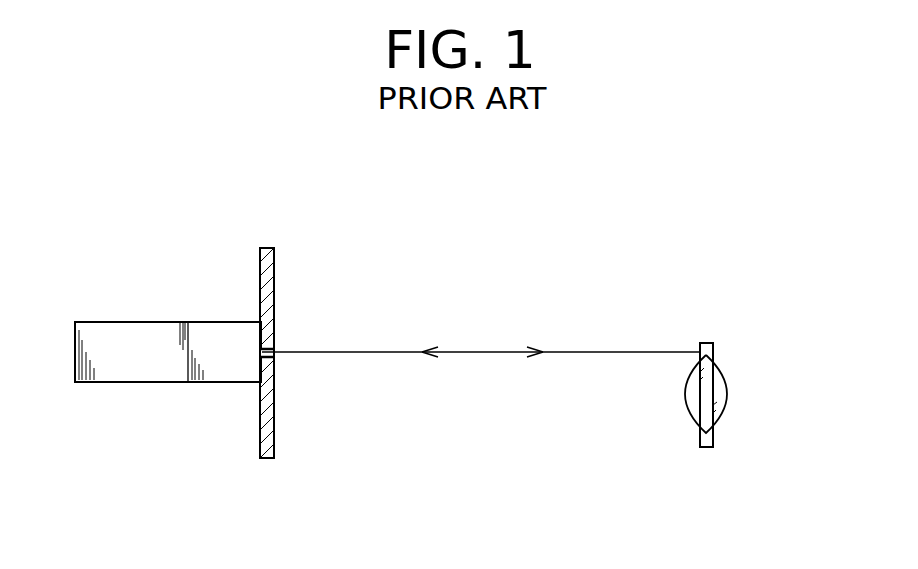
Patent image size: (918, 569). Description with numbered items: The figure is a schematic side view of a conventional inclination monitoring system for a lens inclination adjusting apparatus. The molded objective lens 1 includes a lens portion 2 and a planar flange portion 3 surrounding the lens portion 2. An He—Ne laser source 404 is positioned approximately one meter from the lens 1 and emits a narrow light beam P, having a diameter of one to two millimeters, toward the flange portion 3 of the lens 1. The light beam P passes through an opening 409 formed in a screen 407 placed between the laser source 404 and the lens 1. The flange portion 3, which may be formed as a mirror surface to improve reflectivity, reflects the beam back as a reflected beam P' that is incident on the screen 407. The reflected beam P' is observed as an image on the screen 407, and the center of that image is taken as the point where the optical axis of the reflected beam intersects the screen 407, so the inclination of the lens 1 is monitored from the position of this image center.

The objective lens 1 is at (747, 355).
The lens portion 2 is at (690, 410).
The planar flange portion 3 is at (707, 343).
The He—Ne laser source 404 is at (195, 296).
The screen 407 is at (275, 280).
The opening 409 is at (275, 355).
The light beam P is at (481, 323).
The reflected beam P' is at (452, 377).